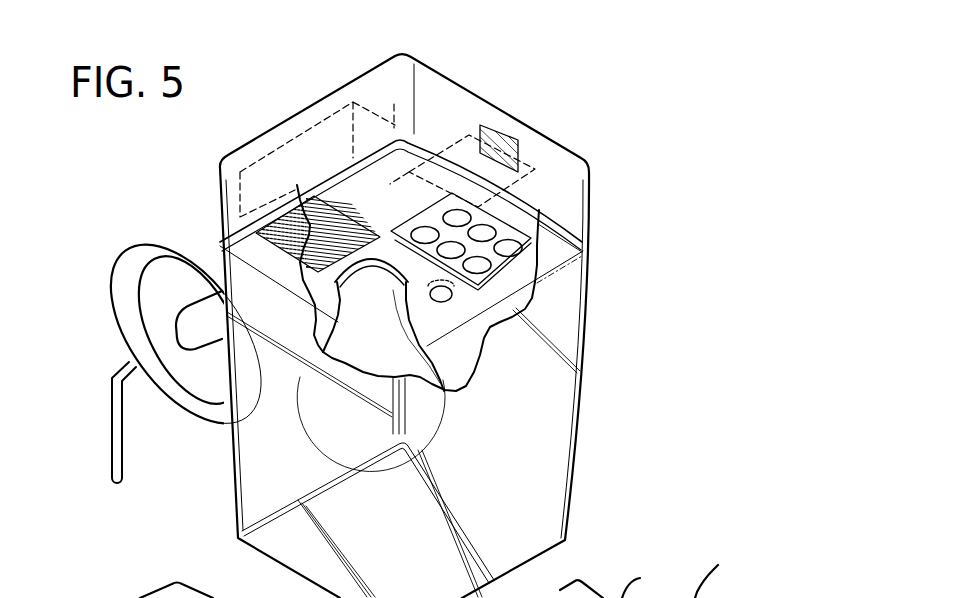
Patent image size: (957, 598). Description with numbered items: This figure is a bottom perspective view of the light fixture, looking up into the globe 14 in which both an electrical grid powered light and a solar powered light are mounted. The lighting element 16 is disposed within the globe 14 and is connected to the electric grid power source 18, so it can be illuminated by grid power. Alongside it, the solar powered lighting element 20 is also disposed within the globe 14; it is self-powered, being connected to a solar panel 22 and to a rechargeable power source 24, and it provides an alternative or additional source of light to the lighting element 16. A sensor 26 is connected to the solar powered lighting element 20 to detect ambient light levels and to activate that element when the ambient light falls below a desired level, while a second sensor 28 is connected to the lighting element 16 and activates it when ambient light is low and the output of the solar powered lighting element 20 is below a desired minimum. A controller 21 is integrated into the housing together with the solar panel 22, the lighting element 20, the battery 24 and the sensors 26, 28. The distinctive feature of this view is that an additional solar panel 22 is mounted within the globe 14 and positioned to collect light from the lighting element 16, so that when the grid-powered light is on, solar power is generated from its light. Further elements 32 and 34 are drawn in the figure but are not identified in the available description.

The globe 14 is at (530, 455).
The lighting element 16 is at (415, 362).
The electric grid power source 18 is at (115, 440).
The solar powered lighting element 20 is at (486, 233).
The controller 21 is at (448, 145).
The solar panel 22 is at (317, 217).
The rechargeable power source 24 is at (292, 141).
The sensor 26 is at (514, 145).
The second sensor 28 is at (450, 295).
The cord 32 is at (720, 576).
The clip 34 is at (640, 578).